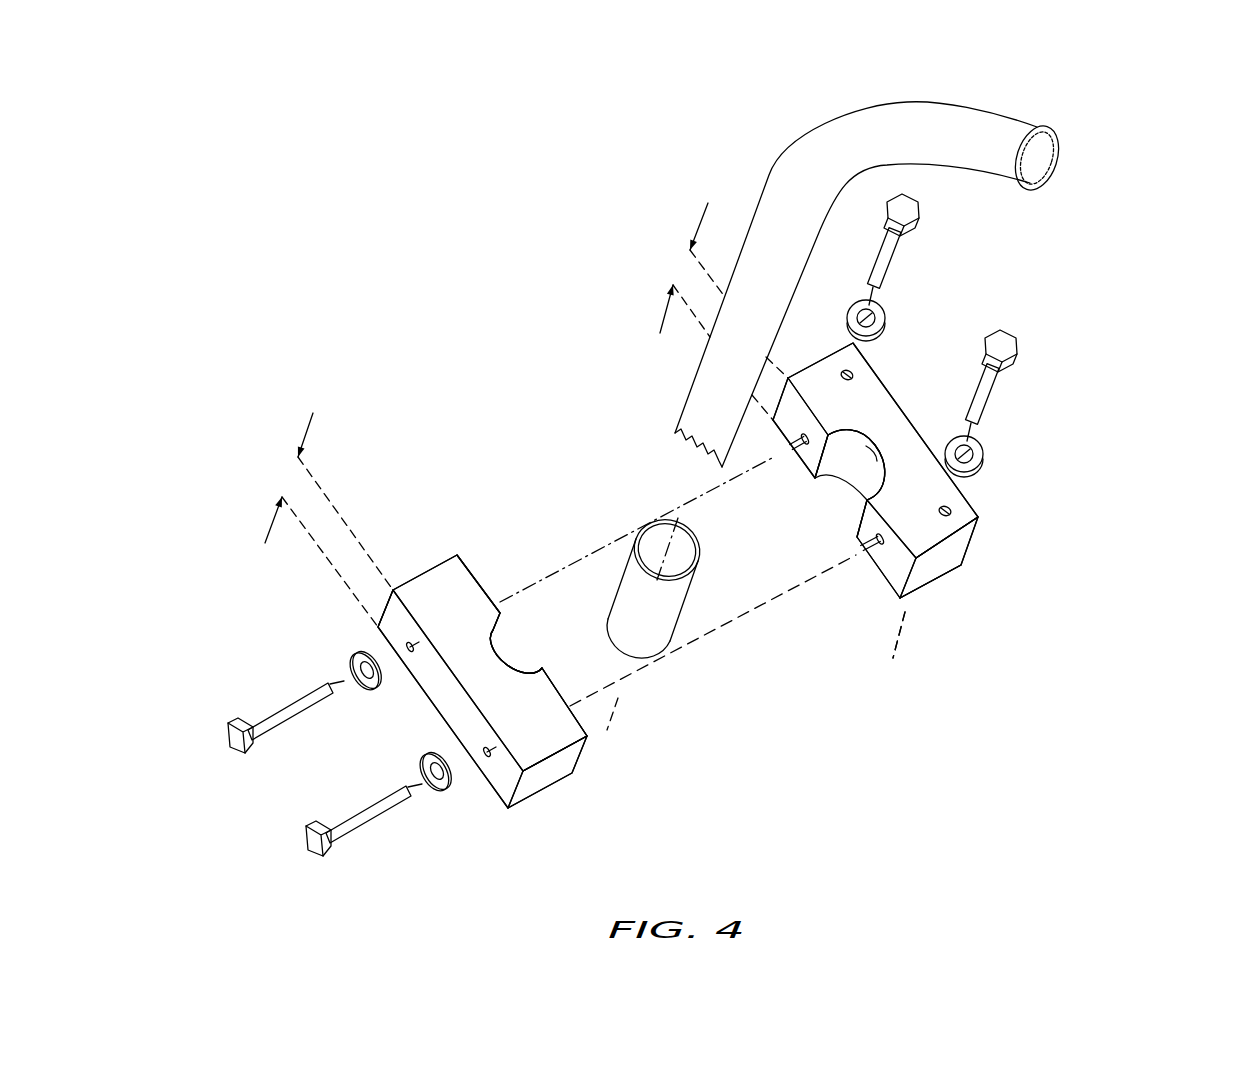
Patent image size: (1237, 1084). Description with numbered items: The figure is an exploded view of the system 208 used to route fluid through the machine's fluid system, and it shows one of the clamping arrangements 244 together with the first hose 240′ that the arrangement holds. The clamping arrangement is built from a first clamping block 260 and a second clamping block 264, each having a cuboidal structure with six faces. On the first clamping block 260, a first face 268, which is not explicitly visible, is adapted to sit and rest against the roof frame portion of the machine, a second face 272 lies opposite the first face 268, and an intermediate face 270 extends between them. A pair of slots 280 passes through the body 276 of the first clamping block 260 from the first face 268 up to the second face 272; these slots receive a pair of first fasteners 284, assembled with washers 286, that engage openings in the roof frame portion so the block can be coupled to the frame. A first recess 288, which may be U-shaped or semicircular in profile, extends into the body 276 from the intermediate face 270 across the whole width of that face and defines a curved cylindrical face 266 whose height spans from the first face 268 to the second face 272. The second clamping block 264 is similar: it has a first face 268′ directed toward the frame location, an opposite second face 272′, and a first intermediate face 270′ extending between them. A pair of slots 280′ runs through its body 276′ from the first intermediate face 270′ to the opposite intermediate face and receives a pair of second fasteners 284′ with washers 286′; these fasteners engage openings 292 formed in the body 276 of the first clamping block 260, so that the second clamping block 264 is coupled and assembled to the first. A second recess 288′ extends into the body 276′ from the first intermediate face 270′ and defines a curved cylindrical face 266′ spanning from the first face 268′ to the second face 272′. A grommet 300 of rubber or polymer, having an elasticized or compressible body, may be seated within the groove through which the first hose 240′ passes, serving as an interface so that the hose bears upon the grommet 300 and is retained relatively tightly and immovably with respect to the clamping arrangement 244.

The system 208 is at (1122, 238).
The first hose 240′ is at (987, 107).
The clamping arrangement 244 is at (1014, 648).
The first clamping block 260 is at (960, 573).
The second clamping block 264 is at (527, 808).
The curved cylindrical face 266 is at (870, 445).
The curved cylindrical face 266′ is at (520, 667).
The first face 268 is at (868, 612).
The first face 268′ is at (565, 783).
The intermediate face 270 is at (923, 588).
The first intermediate face 270′ is at (477, 577).
The second face 272 is at (827, 390).
The second face 272′ is at (450, 567).
The body 276 is at (970, 516).
The body 276′ is at (565, 735).
The pair of slots 280 is at (850, 375).
The pair of slots 280′ is at (410, 652).
The first fasteners 284 is at (897, 262).
The second fasteners 284′ is at (270, 710).
The washers 286 is at (883, 307).
The washers 286′ is at (353, 667).
The first recess 288 is at (859, 485).
The second recess 288′ is at (500, 650).
The openings 292 is at (792, 452).
The grommet 300 is at (682, 607).